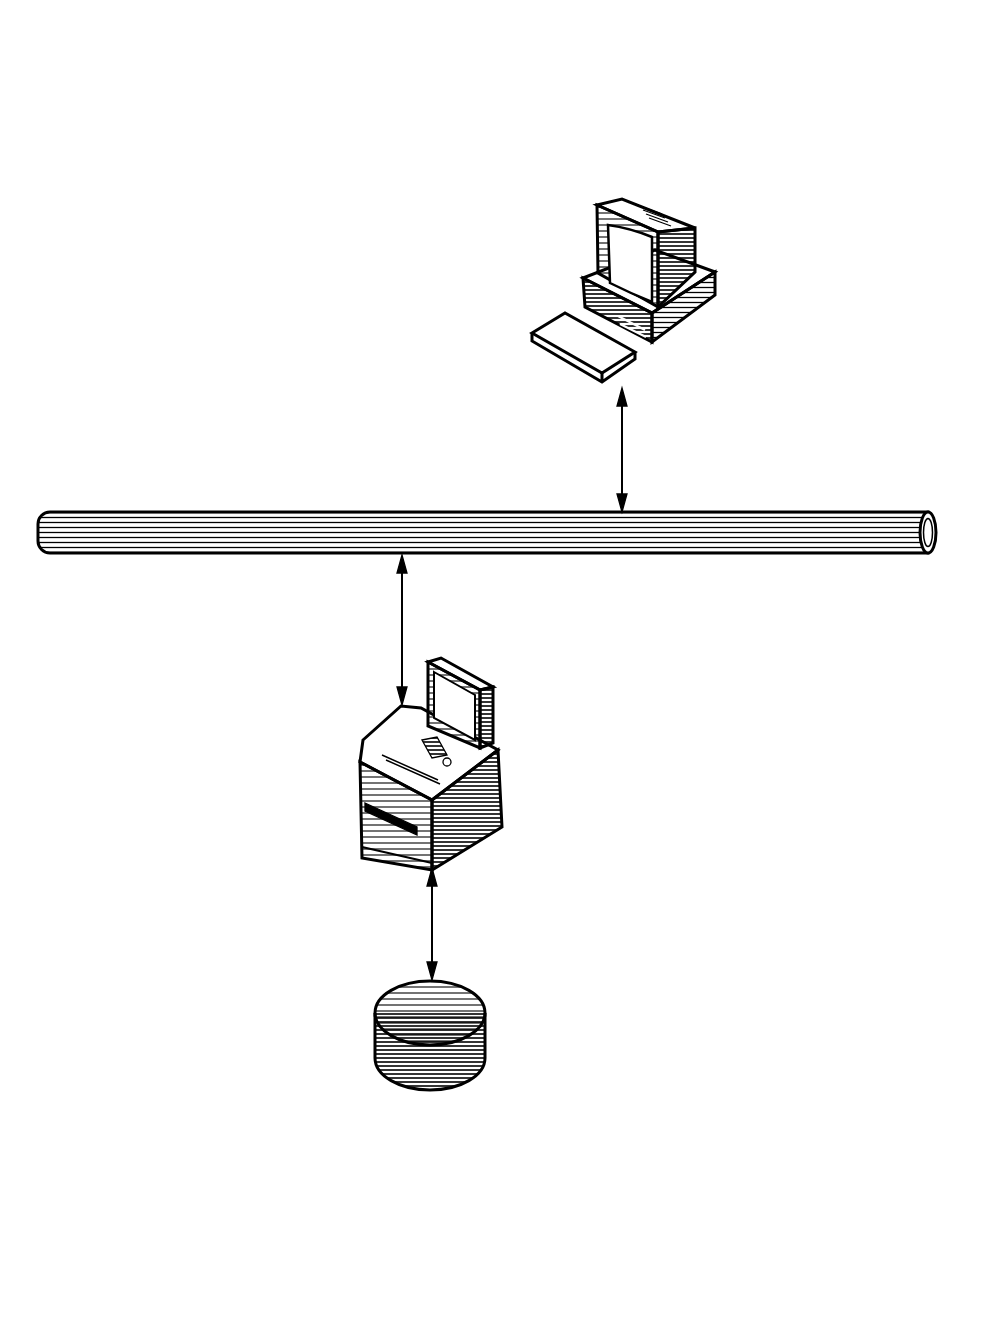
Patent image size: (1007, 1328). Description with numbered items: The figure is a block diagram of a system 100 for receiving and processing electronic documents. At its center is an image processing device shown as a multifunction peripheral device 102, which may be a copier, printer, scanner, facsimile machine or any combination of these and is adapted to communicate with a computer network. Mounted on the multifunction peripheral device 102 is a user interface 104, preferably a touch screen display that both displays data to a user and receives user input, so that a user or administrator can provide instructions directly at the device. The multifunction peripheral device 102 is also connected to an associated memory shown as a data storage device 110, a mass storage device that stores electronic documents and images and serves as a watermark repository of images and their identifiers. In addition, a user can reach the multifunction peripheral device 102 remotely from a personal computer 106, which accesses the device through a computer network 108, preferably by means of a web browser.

The system 100 is at (750, 86).
The multifunction peripheral device 102 is at (507, 767).
The user interface 104 is at (477, 672).
The personal computer 106 is at (692, 222).
The computer network 108 is at (805, 512).
The data storage device 110 is at (480, 992).